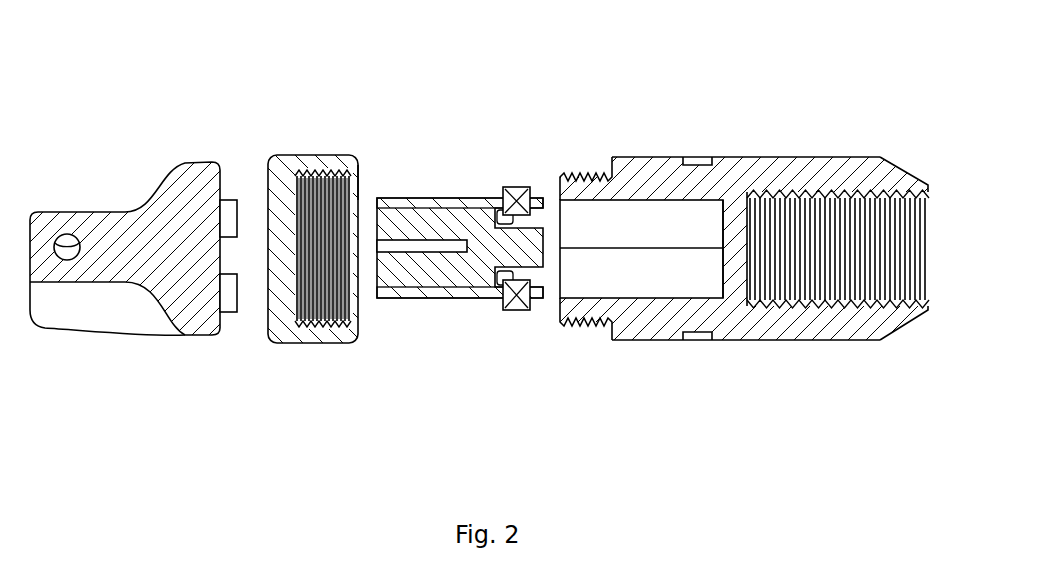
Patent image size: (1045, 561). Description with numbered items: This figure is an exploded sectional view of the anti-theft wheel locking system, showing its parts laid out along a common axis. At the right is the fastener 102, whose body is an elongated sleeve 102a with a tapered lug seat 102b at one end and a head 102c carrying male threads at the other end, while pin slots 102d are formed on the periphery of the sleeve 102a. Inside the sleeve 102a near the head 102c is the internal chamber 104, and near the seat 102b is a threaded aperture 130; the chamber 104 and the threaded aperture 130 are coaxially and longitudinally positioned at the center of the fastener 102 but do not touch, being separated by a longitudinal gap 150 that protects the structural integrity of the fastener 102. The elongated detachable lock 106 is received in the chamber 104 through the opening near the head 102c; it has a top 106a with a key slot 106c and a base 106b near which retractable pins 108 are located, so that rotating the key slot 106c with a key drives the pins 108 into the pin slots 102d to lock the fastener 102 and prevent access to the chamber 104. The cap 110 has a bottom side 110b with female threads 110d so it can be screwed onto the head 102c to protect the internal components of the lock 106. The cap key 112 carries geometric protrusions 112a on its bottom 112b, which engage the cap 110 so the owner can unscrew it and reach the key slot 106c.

The fastener 102 is at (754, 273).
The elongated sleeve 102a is at (755, 172).
The seat 102b is at (927, 185).
The head 102c is at (562, 185).
The pin slots 102d is at (693, 165).
The internal chamber 104 is at (641, 249).
The detachable lock 106 is at (455, 250).
The top 106a is at (378, 197).
The base 106b is at (538, 196).
The key slot 106c is at (452, 252).
The retractable pins 108 is at (518, 199).
The cap 110 is at (316, 239).
The bottom side 110b is at (355, 165).
The female threads 110d is at (330, 307).
The cap key 112 is at (133, 233).
The geometric protrusions 112a is at (230, 293).
The bottom 112b is at (213, 178).
The threaded aperture 130 is at (830, 222).
The longitudinal gap 150 is at (735, 287).